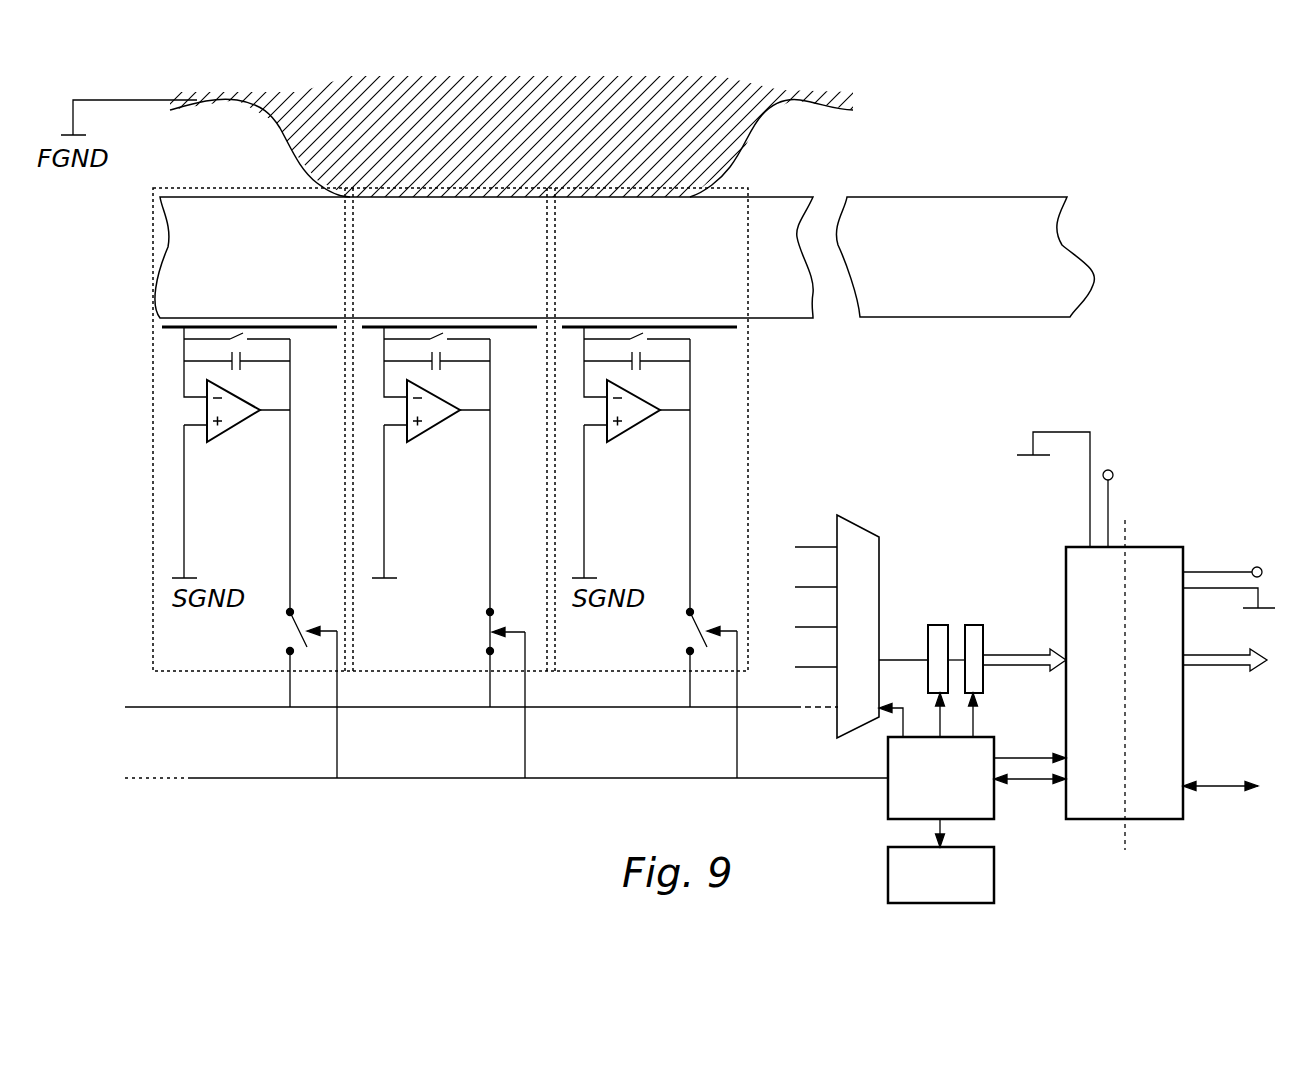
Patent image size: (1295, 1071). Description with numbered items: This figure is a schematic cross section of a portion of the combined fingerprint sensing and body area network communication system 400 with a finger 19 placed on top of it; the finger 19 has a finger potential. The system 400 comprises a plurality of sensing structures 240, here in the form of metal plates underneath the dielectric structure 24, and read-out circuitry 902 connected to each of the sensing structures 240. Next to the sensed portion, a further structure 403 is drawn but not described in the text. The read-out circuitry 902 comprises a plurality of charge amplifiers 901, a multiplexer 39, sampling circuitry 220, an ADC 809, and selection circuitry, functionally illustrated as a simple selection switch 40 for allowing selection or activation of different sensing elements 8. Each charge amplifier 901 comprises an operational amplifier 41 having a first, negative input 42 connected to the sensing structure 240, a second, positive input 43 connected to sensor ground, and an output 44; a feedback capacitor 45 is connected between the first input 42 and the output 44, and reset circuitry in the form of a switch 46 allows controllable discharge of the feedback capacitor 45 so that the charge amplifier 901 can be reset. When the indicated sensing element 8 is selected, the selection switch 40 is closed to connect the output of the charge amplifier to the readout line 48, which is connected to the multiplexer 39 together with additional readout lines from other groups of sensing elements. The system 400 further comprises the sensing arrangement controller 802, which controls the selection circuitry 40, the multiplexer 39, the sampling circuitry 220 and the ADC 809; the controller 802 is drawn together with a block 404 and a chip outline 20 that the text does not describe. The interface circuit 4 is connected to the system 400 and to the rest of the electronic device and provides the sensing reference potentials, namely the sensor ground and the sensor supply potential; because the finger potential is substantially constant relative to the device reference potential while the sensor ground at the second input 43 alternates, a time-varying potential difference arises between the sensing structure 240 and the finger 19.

The finger 19 is at (522, 130).
The dielectric structure 24 is at (484, 257).
The adjacent electrode 403 is at (907, 203).
The combined fingerprint sensing and body area network communication system 400 is at (858, 410).
The sensing element 8 is at (451, 502).
The sensing structure 240 is at (522, 327).
The first input 42 is at (405, 407).
The second input 43 is at (408, 430).
The switch 46 is at (440, 333).
The feedback capacitor 45 is at (455, 348).
The operational amplifier 41 is at (433, 390).
The output 44 is at (429, 450).
The charge amplifier 901 is at (460, 413).
The selection switch 40 is at (470, 630).
The readout line 48 is at (413, 708).
The multiplexer 39 is at (858, 527).
The read-out circuitry 902 is at (910, 446).
The sampling circuitry 220 is at (940, 625).
The ADC 809 is at (975, 625).
The fingerprint sensor chip 20 is at (1125, 533).
The interface circuit 4 is at (1168, 540).
The sensing arrangement controller 802 is at (887, 792).
The memory 404 is at (887, 863).